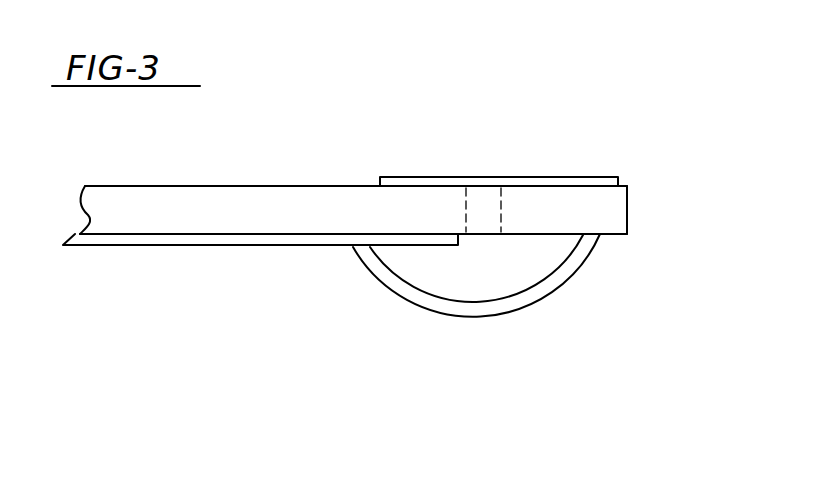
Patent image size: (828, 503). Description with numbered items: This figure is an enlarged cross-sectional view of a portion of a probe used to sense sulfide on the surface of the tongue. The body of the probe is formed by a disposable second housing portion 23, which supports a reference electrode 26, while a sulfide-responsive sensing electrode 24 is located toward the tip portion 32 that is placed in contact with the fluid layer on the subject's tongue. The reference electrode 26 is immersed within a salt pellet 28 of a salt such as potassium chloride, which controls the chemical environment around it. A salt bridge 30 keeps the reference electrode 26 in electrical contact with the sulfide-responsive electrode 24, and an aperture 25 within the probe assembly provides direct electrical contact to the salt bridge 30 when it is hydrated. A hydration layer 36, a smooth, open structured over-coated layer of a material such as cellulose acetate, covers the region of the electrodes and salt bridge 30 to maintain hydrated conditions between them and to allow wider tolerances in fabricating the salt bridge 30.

The second housing portion 23 is at (136, 186).
The sulfide-responsive sensing electrode 24 is at (622, 186).
The aperture 25 is at (502, 200).
The reference electrode 26 is at (427, 238).
The salt pellet 28 is at (535, 269).
The salt bridge 30 is at (486, 177).
The tip portion 32 is at (628, 215).
The hydration layer 36 is at (540, 305).